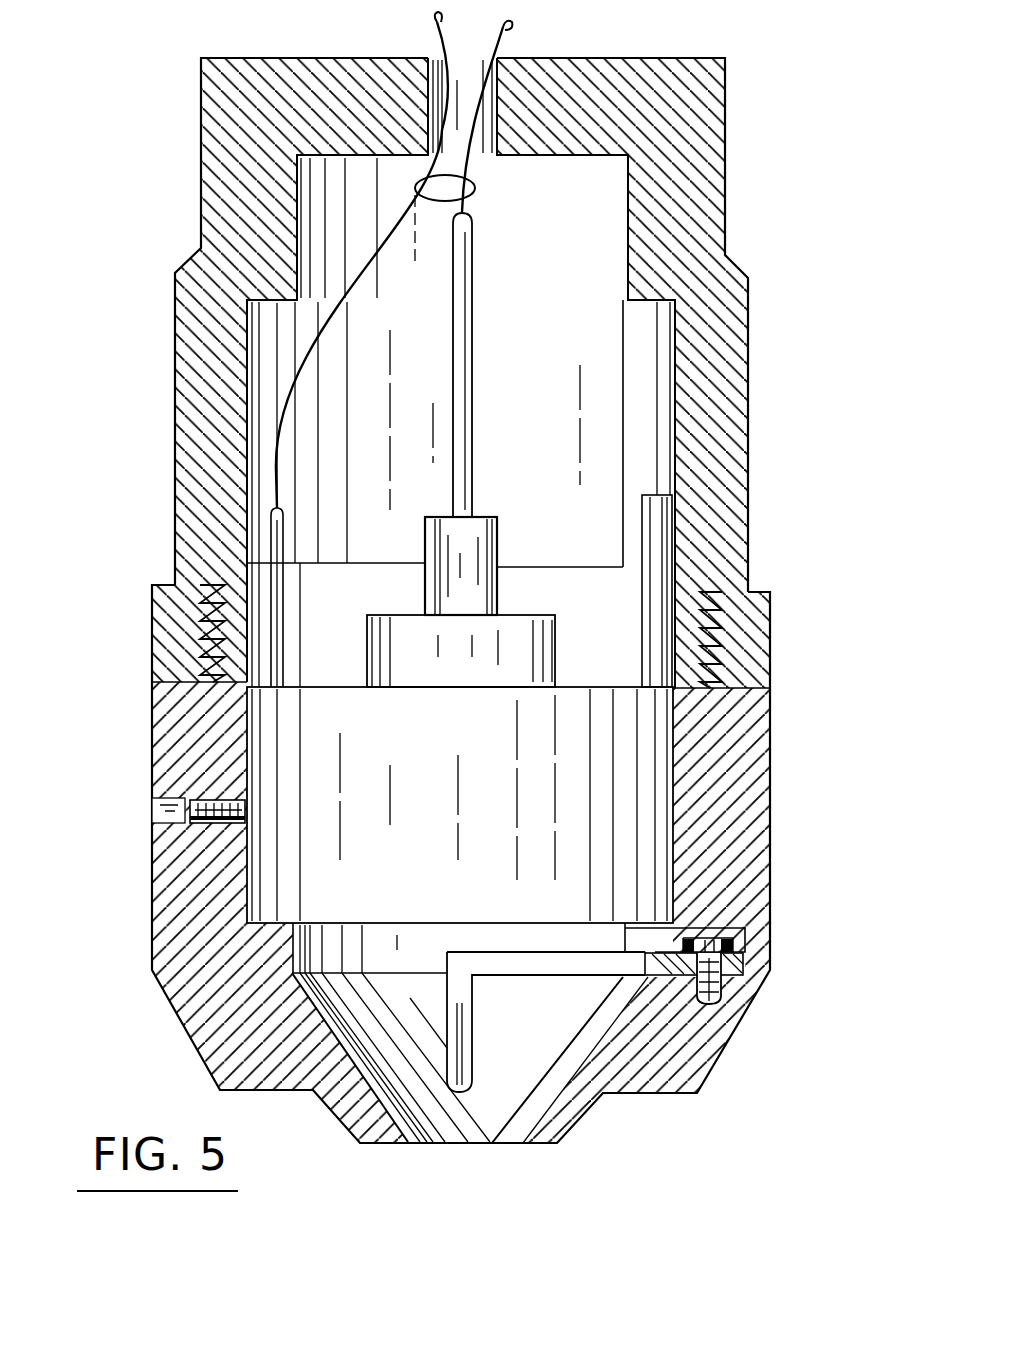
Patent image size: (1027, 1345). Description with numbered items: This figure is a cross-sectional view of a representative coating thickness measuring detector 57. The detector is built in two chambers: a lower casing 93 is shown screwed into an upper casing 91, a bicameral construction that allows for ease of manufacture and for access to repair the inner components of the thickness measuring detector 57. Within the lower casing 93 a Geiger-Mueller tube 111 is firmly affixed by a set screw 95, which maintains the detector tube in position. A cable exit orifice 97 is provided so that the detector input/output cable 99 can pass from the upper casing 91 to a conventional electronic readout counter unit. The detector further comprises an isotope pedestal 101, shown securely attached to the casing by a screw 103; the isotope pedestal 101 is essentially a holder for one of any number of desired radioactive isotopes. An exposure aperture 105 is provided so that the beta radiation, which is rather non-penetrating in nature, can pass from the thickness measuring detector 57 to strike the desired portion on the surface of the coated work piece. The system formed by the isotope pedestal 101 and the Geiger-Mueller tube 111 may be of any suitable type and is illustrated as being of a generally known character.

The coating thickness measuring detector 57 is at (168, 90).
The upper casing 91 is at (772, 236).
The lower casing 93 is at (792, 676).
The set screw 95 is at (192, 850).
The cable exit orifice 97 is at (497, 128).
The detector input/output cable 99 is at (478, 195).
The isotope pedestal 101 is at (507, 1010).
The screw 103 is at (727, 980).
The exposure aperture 105 is at (485, 1145).
The Geiger-Mueller tube 111 is at (437, 721).